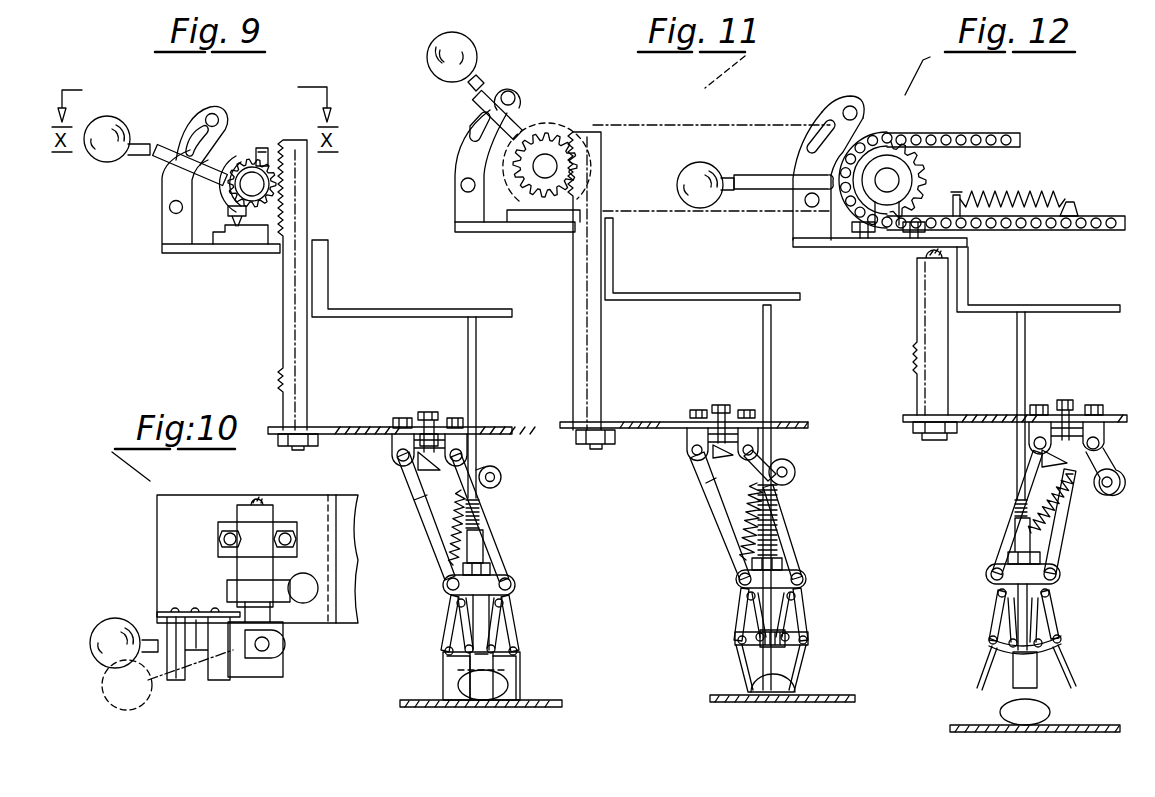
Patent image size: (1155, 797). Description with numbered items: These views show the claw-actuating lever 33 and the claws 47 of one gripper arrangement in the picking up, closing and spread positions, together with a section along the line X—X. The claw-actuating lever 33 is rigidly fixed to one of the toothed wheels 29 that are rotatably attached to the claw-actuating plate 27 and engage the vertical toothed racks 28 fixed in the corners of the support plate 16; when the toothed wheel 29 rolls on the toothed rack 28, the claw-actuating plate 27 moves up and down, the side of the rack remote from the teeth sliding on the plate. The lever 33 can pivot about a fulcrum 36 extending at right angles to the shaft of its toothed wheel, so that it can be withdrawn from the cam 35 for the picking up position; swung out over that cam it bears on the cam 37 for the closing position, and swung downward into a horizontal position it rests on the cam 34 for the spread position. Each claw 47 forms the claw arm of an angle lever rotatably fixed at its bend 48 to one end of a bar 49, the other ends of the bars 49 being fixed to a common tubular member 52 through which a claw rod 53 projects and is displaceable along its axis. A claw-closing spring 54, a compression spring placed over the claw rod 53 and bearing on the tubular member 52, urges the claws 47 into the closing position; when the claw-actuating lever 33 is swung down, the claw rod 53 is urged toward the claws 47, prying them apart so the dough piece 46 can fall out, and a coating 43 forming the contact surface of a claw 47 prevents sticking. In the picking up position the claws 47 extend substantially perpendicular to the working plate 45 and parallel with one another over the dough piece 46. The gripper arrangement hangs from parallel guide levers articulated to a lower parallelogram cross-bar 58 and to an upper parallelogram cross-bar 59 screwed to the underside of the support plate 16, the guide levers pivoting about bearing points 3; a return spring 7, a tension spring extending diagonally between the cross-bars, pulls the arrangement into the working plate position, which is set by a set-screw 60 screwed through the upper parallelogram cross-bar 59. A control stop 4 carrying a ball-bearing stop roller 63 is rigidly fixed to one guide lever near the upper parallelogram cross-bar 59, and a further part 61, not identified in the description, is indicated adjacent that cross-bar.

In FIG. 9, the bearing points 3 is at (470, 517).
In FIG. 9, the control stop 4 is at (494, 468).
In FIG. 9, the return spring 7 is at (445, 510).
In FIG. 9, the support plate 16 is at (332, 425).
In FIG. 11, the support plate 16 is at (791, 424).
In FIG. 12, the support plate 16 is at (985, 424).
In FIG. 9, the claw-actuating plate 27 is at (232, 252).
In FIG. 10, the claw-actuating plate 27 is at (182, 527).
In FIG. 11, the claw-actuating plate 27 is at (716, 298).
In FIG. 12, the claw-actuating plate 27 is at (1003, 308).
In FIG. 9, the toothed racks 28 is at (307, 190).
In FIG. 10, the toothed racks 28 is at (307, 585).
In FIG. 9, the toothed wheels 29 is at (262, 215).
In FIG. 10, the toothed wheels 29 is at (278, 595).
In FIG. 9, the claw-actuating lever 33 is at (133, 152).
In FIG. 10, the claw-actuating lever 33 is at (150, 640).
In FIG. 11, the claw-actuating lever 33 is at (483, 93).
In FIG. 12, the claw-actuating lever 33 is at (742, 178).
In FIG. 9, the cam for the spread position 34 is at (156, 225).
In FIG. 10, the cam for the spread position 34 is at (170, 627).
In FIG. 11, the cam for the spread position 34 is at (455, 196).
In FIG. 12, the cam for the spread position 34 is at (790, 216).
In FIG. 9, the cam for the picking up position 35 is at (190, 140).
In FIG. 10, the cam for the picking up position 35 is at (193, 634).
In FIG. 11, the cam for the picking up position 35 is at (470, 119).
In FIG. 12, the cam for the picking up position 35 is at (814, 141).
In FIG. 9, the fulcrum 36 is at (215, 212).
In FIG. 10, the fulcrum 36 is at (267, 646).
In FIG. 9, the cam for the closing position 37 is at (214, 112).
In FIG. 10, the cam for the closing position 37 is at (218, 637).
In FIG. 11, the cam for the closing position 37 is at (520, 97).
In FIG. 12, the cam for the closing position 37 is at (859, 104).
In FIG. 9, the coating 43 is at (508, 690).
In FIG. 9, the working plate 45 is at (404, 704).
In FIG. 9, the dough piece 46 is at (500, 684).
In FIG. 11, the dough piece 46 is at (786, 681).
In FIG. 12, the dough piece 46 is at (1032, 714).
In FIG. 9, the claws 47 is at (520, 668).
In FIG. 11, the claws 47 is at (742, 669).
In FIG. 12, the claws 47 is at (1075, 668).
In FIG. 9, the bend 48 is at (440, 668).
In FIG. 9, the bar 49 is at (512, 630).
In FIG. 9, the tubular member 52 is at (485, 553).
In FIG. 9, the claw rod 53 is at (477, 352).
In FIG. 11, the claw rod 53 is at (772, 359).
In FIG. 12, the claw rod 53 is at (1025, 370).
In FIG. 9, the claw-closing spring 54 is at (486, 515).
In FIG. 9, the lower parallelogram cross-bar 58 is at (482, 586).
In FIG. 9, the upper parallelogram cross-bar 59 is at (413, 412).
In FIG. 9, the set-screw for the working plate position 60 is at (431, 410).
In FIG. 9, the clamp lug 61 is at (400, 470).
In FIG. 9, the ball-bearing stop roller 63 is at (501, 482).